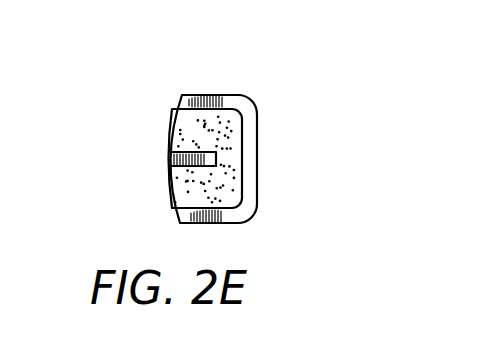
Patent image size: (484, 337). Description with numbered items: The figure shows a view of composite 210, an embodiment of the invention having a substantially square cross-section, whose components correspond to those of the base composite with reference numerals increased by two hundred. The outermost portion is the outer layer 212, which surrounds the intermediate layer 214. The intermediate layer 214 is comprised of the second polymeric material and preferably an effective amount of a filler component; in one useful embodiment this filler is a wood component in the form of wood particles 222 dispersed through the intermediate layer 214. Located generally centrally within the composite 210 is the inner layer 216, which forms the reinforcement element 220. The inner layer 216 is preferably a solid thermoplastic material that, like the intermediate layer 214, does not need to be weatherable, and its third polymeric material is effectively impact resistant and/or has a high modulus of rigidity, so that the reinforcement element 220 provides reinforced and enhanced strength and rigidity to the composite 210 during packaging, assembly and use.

The composite 210 is at (157, 78).
The outer layer 212 is at (243, 95).
The intermediate layer 214 is at (185, 130).
The inner layer 216 is at (170, 159).
The reinforcement element 220 is at (216, 166).
The wood particles 222 is at (223, 122).